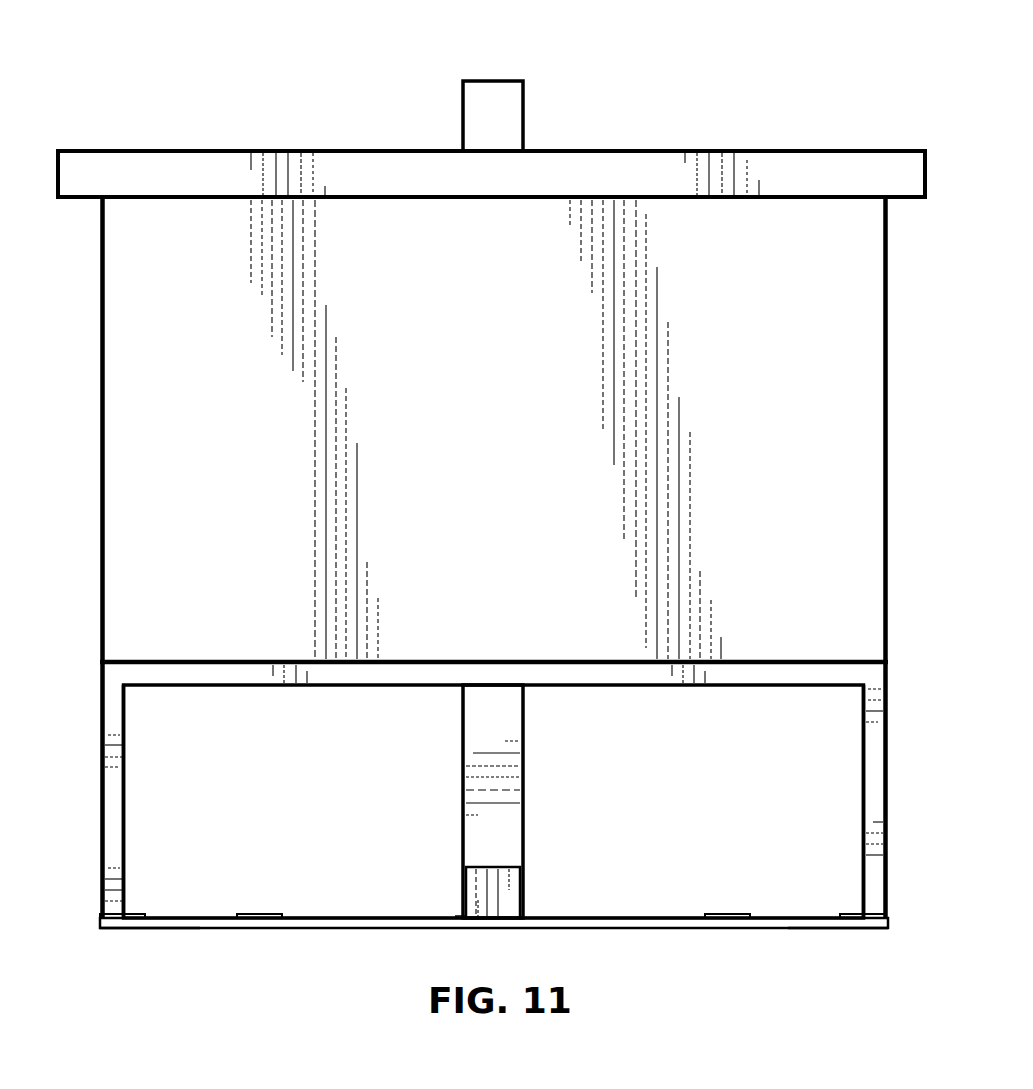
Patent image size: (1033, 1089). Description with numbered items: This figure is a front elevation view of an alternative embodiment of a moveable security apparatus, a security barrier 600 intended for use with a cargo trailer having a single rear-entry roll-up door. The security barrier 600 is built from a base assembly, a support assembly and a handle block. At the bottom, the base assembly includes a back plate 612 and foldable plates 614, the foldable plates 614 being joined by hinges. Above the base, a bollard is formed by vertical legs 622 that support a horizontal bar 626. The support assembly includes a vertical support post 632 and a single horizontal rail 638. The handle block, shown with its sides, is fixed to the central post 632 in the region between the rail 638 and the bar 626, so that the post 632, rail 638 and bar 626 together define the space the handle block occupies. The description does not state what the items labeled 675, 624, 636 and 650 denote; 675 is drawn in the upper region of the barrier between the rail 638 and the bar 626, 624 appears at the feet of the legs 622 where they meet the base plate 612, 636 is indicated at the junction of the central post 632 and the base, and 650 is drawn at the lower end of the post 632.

The security barrier 600 is at (144, 61).
The horizontal rail 638 is at (777, 157).
The vertical support post 632 is at (508, 112).
The upper chamber 675 is at (509, 395).
The horizontal bar 626 is at (253, 688).
The vertical legs 622 is at (105, 819).
The pad / seal 624 is at (130, 914).
The back plate 612 is at (548, 929).
The foldable plates 614 is at (178, 930).
The junction 636 is at (455, 912).
The outlet block 650 is at (515, 893).